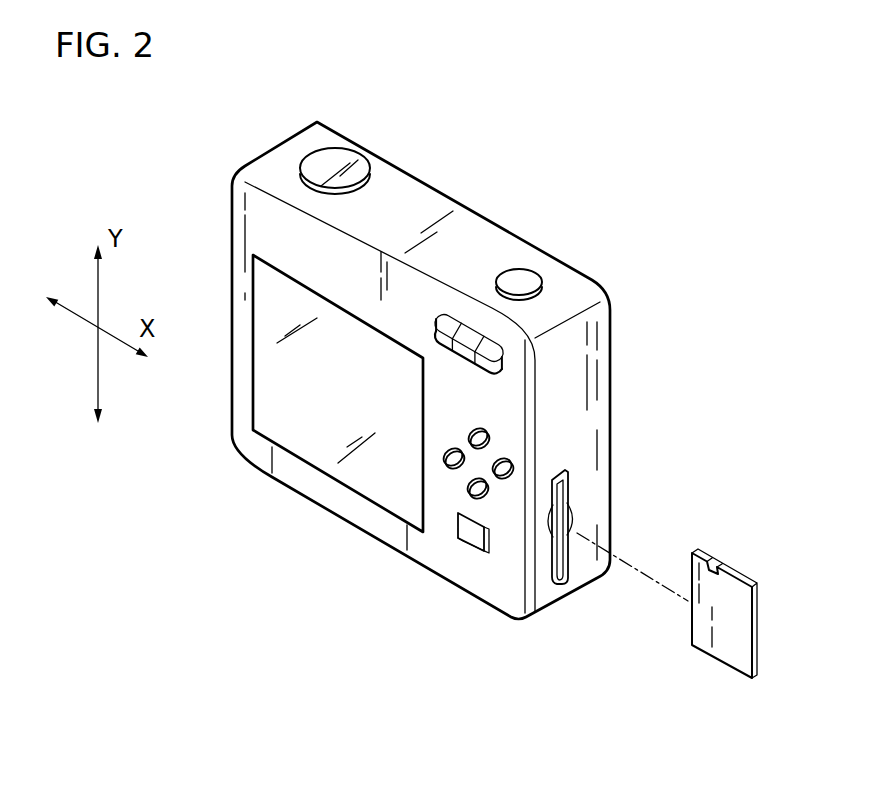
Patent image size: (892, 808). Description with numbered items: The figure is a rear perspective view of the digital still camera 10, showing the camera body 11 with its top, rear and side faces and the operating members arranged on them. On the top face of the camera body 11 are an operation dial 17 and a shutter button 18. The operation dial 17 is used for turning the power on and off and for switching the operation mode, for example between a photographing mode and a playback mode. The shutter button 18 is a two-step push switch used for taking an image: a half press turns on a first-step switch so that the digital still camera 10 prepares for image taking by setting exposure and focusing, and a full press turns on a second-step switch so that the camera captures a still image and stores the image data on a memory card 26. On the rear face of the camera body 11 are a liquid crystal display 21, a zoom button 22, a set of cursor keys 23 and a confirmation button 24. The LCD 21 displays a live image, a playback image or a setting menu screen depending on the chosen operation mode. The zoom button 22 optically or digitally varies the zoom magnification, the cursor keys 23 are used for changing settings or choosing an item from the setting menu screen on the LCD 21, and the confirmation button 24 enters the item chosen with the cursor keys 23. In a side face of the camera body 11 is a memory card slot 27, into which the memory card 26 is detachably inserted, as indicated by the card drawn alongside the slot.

The digital still camera 10 is at (438, 173).
The camera body 11 is at (467, 222).
The operation dial 17 is at (333, 163).
The shutter button 18 is at (519, 280).
The liquid crystal display (LCD) 21 is at (293, 365).
The zoom button 22 is at (495, 343).
The cursor keys 23 is at (483, 433).
The confirmation button 24 is at (467, 535).
The memory card 26 is at (738, 579).
The memory card slot 27 is at (559, 493).